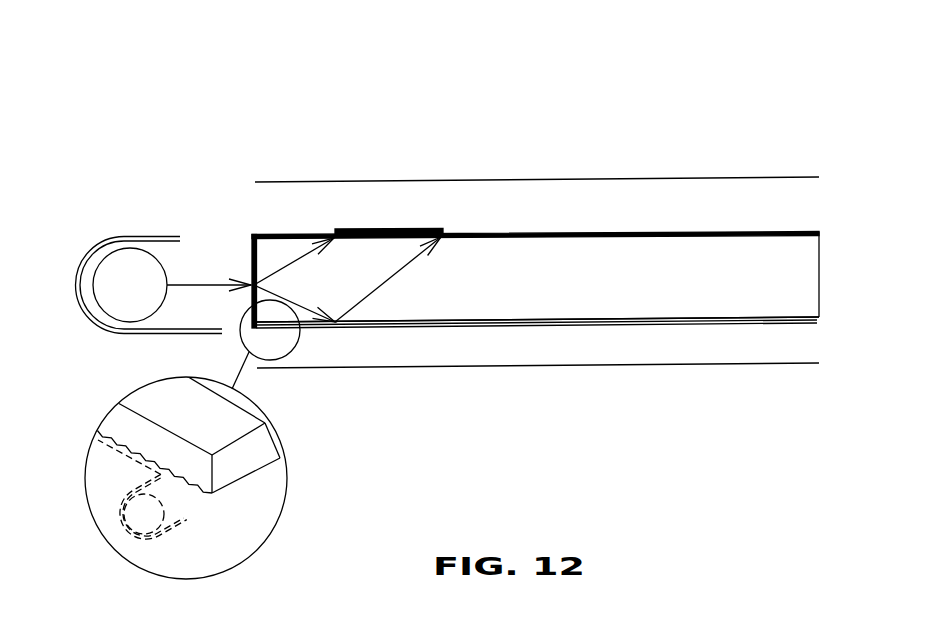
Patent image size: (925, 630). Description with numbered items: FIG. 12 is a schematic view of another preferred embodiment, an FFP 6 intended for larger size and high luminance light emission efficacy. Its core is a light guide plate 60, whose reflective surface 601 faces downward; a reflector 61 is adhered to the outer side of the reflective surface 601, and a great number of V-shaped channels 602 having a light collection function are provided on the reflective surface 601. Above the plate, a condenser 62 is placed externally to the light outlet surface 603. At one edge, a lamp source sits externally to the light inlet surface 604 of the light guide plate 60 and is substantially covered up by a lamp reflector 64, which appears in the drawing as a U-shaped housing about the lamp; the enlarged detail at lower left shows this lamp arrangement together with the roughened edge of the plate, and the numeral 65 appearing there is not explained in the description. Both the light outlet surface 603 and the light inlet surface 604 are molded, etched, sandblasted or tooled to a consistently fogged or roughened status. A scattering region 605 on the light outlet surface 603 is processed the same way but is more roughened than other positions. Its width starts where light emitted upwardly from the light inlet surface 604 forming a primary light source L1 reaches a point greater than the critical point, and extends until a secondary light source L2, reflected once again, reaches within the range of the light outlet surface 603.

The FFP 6 is at (128, 72).
The light guide plate 60 is at (819, 283).
The reflective surface 601 is at (818, 320).
The V-shaped channels 602 is at (787, 325).
The light outlet surface 603 is at (792, 233).
The light inlet surface 604 is at (254, 260).
The scattering region 605 is at (355, 232).
The reflector 61 is at (768, 364).
The condenser 62 is at (790, 177).
The lamp reflector 64 is at (100, 273).
The lamp reflector 65 is at (90, 312).
The primary light source L1 is at (293, 262).
The secondary light source L2 is at (382, 289).